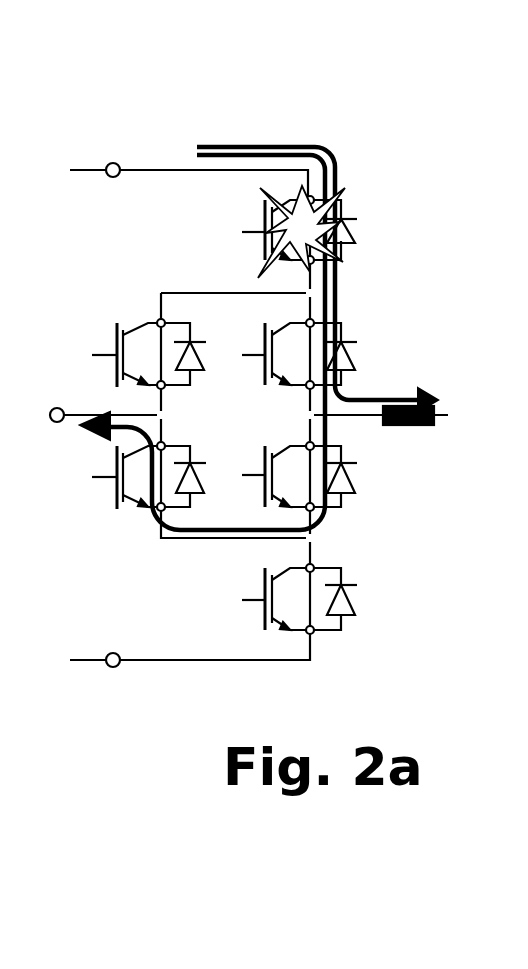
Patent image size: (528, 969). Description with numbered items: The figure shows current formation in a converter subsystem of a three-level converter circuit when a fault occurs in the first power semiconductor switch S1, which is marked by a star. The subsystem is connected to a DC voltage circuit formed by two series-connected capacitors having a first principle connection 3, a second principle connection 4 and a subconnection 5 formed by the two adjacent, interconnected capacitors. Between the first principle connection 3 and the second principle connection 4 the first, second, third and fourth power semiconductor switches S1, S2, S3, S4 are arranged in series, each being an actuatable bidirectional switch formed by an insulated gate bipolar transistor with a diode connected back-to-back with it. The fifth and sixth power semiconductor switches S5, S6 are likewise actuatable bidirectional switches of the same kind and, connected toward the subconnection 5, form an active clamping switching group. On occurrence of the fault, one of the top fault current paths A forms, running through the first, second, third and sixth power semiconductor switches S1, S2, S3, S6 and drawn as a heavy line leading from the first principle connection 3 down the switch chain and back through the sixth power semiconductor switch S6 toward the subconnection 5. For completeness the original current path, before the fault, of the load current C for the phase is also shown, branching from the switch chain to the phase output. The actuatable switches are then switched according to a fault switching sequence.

The subconnection 5 is at (56, 408).
The first principle connection 3 is at (116, 164).
The second principle connection 4 is at (116, 666).
The top fault current path A is at (228, 152).
The load current C is at (333, 167).
The first power semiconductor switch S1 is at (309, 230).
The second power semiconductor switch S2 is at (311, 352).
The third power semiconductor switch S3 is at (311, 474).
The fourth power semiconductor switch S4 is at (310, 597).
The fifth power semiconductor switch S5 is at (149, 347).
The sixth power semiconductor switch S6 is at (149, 489).